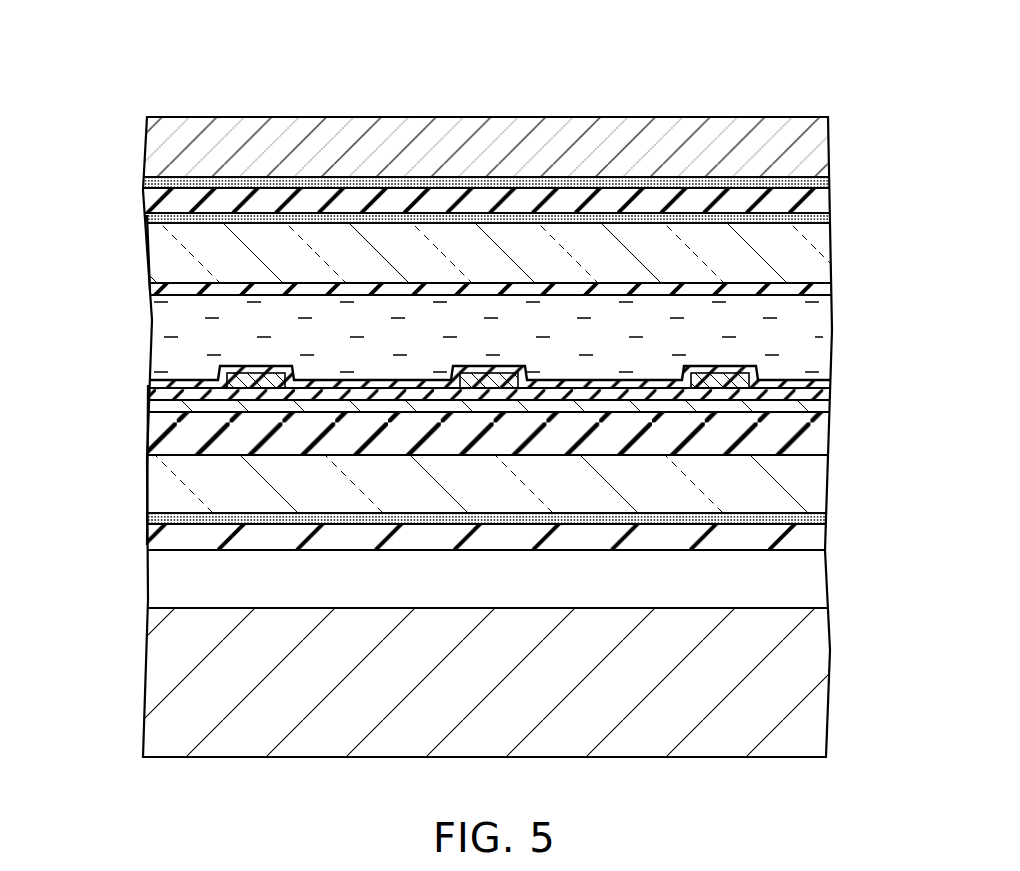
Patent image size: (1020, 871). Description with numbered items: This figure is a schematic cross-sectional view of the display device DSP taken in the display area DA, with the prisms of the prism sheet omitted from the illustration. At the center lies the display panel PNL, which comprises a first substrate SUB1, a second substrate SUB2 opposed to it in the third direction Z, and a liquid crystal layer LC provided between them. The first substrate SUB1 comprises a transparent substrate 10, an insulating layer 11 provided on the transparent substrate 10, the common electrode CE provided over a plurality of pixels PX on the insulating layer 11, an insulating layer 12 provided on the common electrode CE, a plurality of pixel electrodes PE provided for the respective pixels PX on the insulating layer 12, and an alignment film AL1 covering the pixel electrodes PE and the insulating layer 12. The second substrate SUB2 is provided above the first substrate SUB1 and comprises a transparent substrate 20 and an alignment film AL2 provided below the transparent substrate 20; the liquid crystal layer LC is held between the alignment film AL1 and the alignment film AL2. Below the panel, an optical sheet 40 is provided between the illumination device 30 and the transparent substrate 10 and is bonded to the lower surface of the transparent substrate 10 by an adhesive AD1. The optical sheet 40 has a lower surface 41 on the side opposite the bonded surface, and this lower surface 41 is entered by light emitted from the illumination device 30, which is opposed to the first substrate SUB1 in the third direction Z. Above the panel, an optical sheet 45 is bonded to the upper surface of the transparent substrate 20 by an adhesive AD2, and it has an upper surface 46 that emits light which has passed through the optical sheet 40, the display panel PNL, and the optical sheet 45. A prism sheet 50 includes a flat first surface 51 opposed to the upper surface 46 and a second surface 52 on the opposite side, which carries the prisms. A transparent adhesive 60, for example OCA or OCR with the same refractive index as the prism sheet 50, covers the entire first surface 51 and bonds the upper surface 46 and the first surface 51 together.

The prism sheet 50 is at (826, 133).
The adhesive 60 is at (826, 181).
The optical sheet 45 is at (826, 201).
The adhesive AD2 is at (826, 218).
The transparent substrate 20 is at (826, 250).
The alignment film AL2 is at (826, 290).
The liquid crystal layer LC is at (160, 327).
The alignment film AL1 is at (826, 384).
The pixel electrode PE is at (265, 377).
The insulating layer 12 is at (826, 394).
The common electrode CE is at (826, 406).
The insulating layer 11 is at (826, 435).
The transparent substrate 10 is at (826, 485).
The adhesive AD1 is at (826, 518).
The optical sheet 40 is at (826, 537).
The lower surface 41 is at (407, 553).
The illumination device 30 is at (826, 651).
The upper surface 46 is at (372, 183).
The first surface 51 is at (431, 182).
The second surface 52 is at (490, 110).
The display area DA is at (637, 85).
The display device DSP is at (717, 85).
The display panel PNL is at (82, 202).
The second substrate SUB2 is at (145, 262).
The first substrate SUB1 is at (145, 428).
The pixel PX is at (202, 368).
The third direction Z is at (117, 108).